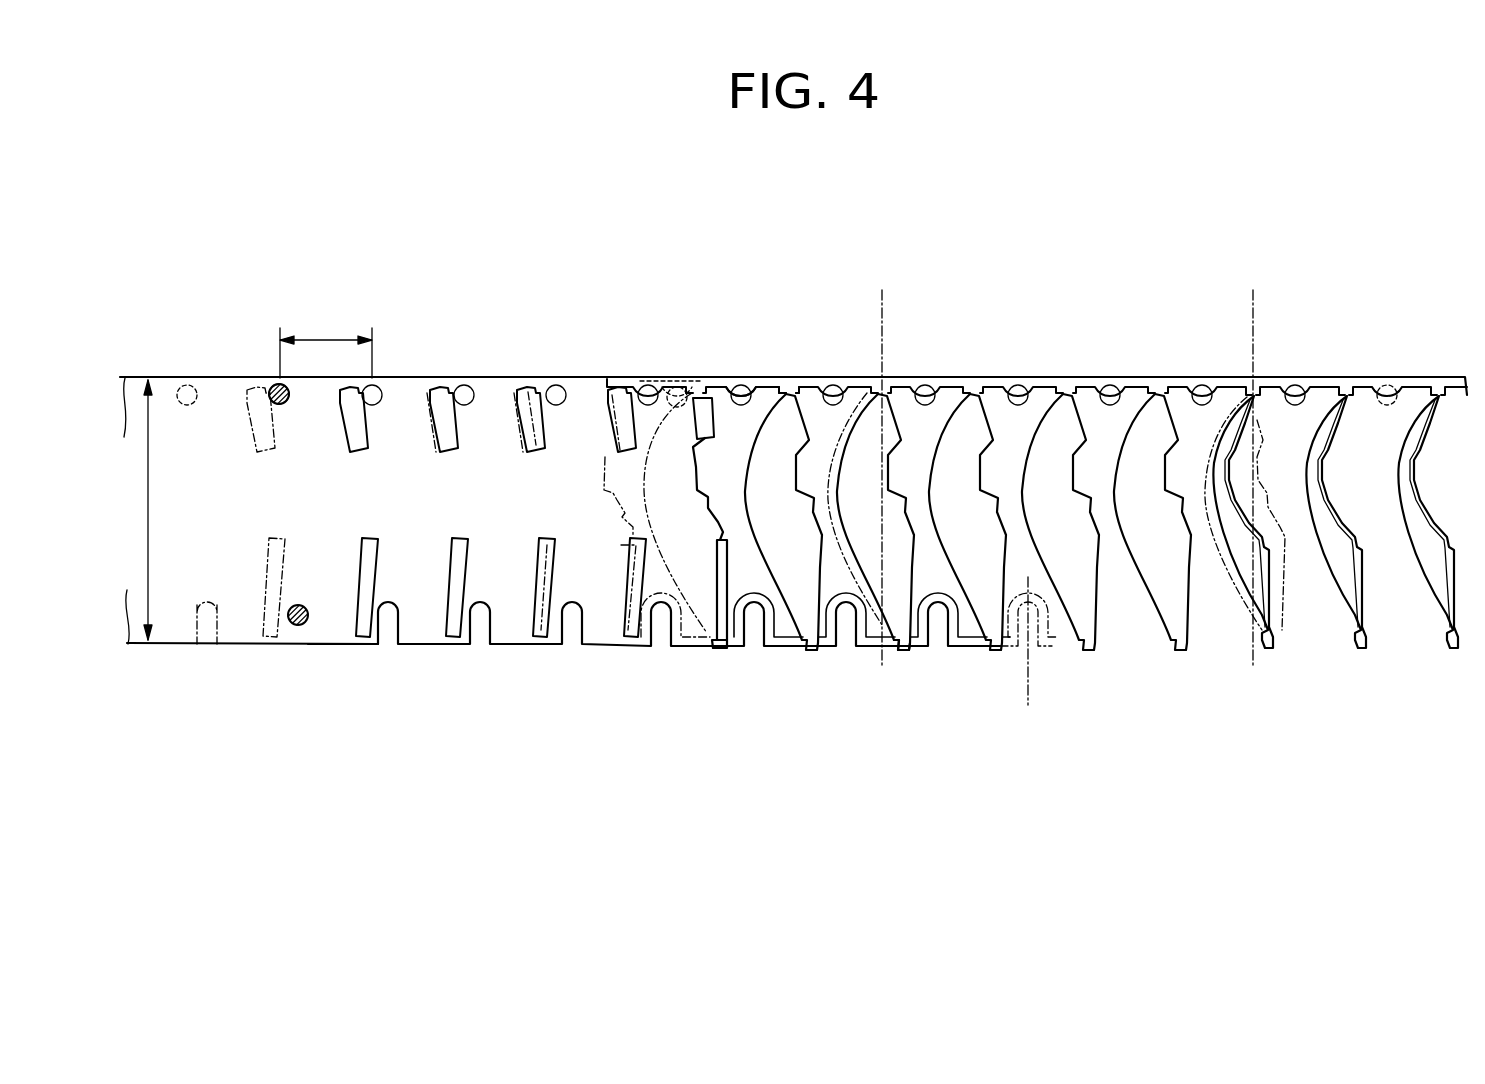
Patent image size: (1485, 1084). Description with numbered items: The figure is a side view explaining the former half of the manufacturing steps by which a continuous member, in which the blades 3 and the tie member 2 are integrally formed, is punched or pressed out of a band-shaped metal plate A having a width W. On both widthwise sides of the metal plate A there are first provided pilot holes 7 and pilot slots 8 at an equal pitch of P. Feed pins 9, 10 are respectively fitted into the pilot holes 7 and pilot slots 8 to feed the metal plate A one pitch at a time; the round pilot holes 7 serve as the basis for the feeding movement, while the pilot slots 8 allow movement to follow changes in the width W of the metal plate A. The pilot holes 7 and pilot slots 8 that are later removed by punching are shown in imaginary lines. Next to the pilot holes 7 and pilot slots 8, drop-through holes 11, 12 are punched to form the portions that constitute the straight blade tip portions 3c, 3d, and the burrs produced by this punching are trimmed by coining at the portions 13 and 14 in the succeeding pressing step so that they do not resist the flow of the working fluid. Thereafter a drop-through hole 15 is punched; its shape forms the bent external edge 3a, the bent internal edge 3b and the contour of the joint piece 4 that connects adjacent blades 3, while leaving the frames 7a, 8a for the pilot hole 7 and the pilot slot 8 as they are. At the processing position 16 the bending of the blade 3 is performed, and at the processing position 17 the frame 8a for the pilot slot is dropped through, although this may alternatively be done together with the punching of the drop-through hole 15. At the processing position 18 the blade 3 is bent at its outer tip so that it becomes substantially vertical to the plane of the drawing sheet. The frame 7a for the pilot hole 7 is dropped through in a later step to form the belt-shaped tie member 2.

The tie member 2 is at (1048, 380).
The blade 3 is at (1342, 568).
The bent external edge 3a is at (730, 640).
The bent internal edge 3b is at (712, 398).
The straight blade tip portion 3c is at (522, 423).
The straight blade tip portion 3d is at (540, 593).
The joint piece 4 is at (795, 392).
The pilot hole 7 is at (280, 402).
The frame for the pilot hole 7a is at (748, 385).
The pilot slot 8 is at (380, 625).
The frame for the pilot slot 8a is at (903, 620).
The feed pin 9 is at (277, 388).
The feed pin 10 is at (295, 622).
The drop-through hole 11 is at (360, 427).
The drop-through hole 12 is at (382, 572).
The portion to be subjected to coining 13 is at (515, 411).
The portion to be subjected to coining 14 is at (537, 612).
The drop-through hole 15 is at (668, 390).
The processing position 16 is at (882, 327).
The processing position 17 is at (1028, 705).
The processing position 18 is at (1253, 327).
The band-shaped metal plate A is at (226, 400).
The pitch P is at (326, 343).
The width W is at (160, 510).